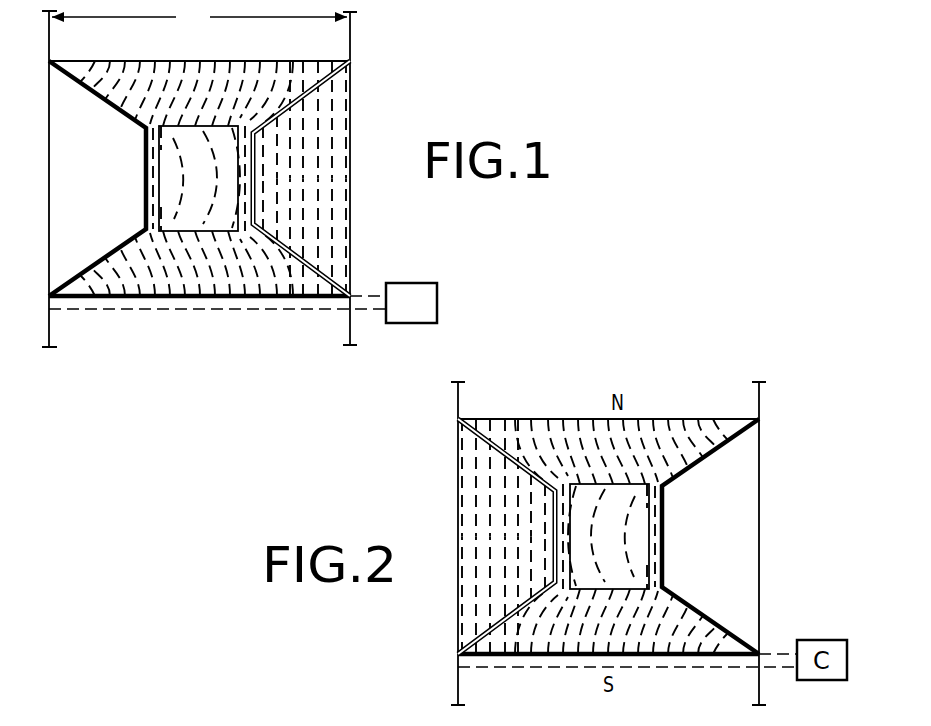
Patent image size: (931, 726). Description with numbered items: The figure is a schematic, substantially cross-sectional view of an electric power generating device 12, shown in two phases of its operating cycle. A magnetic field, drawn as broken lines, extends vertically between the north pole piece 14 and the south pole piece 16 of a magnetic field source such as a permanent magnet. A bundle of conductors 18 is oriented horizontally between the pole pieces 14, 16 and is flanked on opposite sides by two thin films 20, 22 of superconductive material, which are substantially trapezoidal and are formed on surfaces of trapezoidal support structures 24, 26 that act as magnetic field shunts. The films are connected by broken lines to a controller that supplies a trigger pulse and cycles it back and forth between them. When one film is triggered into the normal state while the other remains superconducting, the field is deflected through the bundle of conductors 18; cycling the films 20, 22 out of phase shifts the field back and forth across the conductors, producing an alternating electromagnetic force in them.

In FIG. 1, the electric power generating device 12 is at (376, 103).
In FIG. 1, the north pole piece 14 is at (352, 37).
In FIG. 2, the north pole piece 14 is at (760, 395).
In FIG. 1, the south pole piece 16 is at (352, 343).
In FIG. 2, the south pole piece 16 is at (762, 697).
In FIG. 1, the bundle of conductors 18 is at (168, 236).
In FIG. 2, the bundle of conductors 18 is at (573, 640).
In FIG. 1, the thin film of superconductive material 20 is at (326, 261).
In FIG. 2, the thin film of superconductive material 20 is at (733, 623).
In FIG. 1, the thin film of superconductive material 22 is at (106, 262).
In FIG. 2, the thin film of superconductive material 22 is at (519, 652).
In FIG. 1, the support structure 24 is at (352, 178).
In FIG. 2, the support structure 24 is at (760, 507).
In FIG. 1, the support structure 26 is at (48, 153).
In FIG. 2, the support structure 26 is at (456, 533).